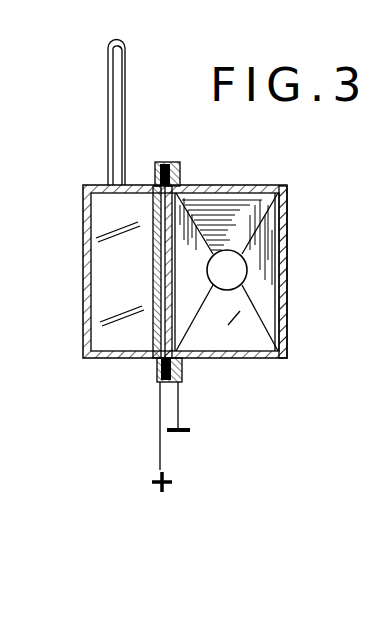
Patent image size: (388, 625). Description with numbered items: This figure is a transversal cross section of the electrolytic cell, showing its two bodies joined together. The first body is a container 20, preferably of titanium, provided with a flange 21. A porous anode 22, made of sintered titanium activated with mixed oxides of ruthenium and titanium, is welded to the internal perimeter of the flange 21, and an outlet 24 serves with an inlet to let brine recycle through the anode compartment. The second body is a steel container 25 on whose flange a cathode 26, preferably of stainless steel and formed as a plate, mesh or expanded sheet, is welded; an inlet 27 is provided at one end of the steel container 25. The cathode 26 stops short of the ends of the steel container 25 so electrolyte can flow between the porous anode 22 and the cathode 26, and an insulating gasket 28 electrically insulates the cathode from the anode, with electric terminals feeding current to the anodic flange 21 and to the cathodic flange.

The container 20 is at (84, 278).
The flange 21 is at (160, 368).
The porous anode 22 is at (153, 264).
The outlet 24 is at (118, 68).
The steel container 25 is at (289, 290).
The cathode 26 is at (180, 212).
The inlet 27 is at (222, 275).
The insulating gasket 28 is at (165, 164).